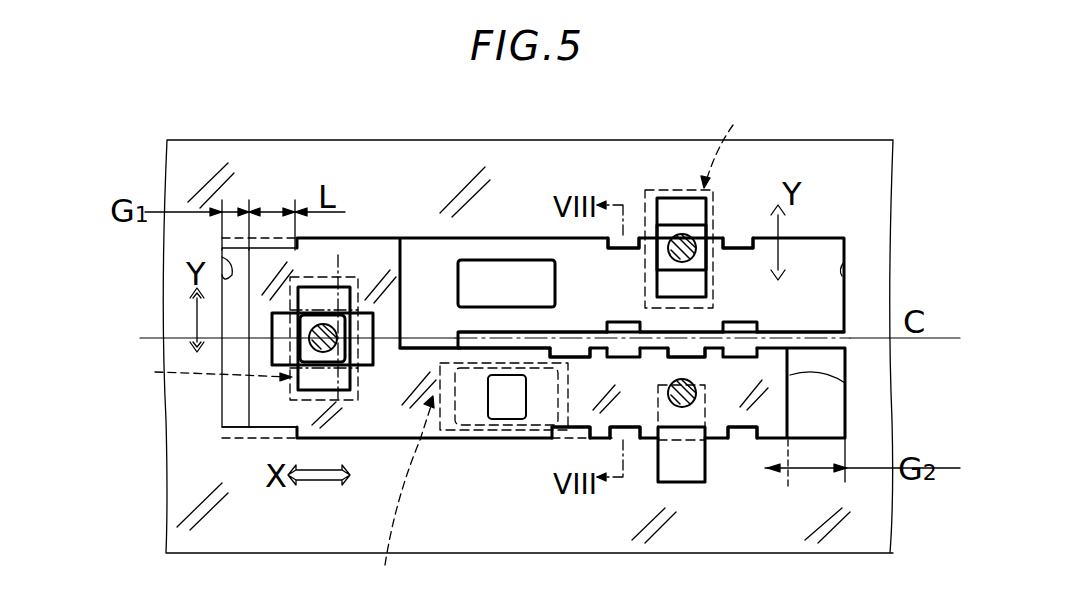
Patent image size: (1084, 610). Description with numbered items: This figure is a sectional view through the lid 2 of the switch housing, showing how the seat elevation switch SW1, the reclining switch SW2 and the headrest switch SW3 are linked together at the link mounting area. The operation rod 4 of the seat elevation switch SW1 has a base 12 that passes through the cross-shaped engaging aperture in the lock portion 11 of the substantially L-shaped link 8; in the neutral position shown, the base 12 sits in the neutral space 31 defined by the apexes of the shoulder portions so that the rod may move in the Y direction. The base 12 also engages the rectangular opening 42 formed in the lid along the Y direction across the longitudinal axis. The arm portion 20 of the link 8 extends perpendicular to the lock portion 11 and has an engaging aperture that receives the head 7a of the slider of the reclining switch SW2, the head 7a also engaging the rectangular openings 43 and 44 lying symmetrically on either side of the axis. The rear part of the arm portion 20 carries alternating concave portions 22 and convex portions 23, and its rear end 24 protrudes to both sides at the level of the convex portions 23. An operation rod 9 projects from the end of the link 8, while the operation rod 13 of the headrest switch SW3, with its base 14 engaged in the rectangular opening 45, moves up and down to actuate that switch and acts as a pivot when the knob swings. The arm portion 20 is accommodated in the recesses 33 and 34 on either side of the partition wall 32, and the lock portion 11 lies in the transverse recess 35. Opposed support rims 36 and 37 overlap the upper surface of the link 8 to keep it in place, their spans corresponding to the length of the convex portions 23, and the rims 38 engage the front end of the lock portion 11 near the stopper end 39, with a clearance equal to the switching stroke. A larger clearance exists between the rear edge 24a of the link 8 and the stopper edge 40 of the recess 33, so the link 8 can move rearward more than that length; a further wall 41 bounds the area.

The lid 2 is at (327, 150).
The operation rod 4 is at (373, 325).
The head 7a is at (510, 410).
The link 8 is at (378, 445).
The operation rod 9 is at (698, 402).
The lock portion 11 is at (257, 395).
The base 12 is at (320, 325).
The operation rod 13 is at (713, 228).
The base 14 is at (670, 232).
The arm portion 20 is at (448, 440).
The concave portions 22 is at (573, 352).
The convex portions 23 is at (600, 350).
The rear end 24 is at (762, 445).
The rear edge 24a is at (845, 383).
The neutral space 31 is at (337, 313).
The partition wall 32 is at (468, 318).
The recess 33 is at (838, 432).
The recess 34 is at (824, 313).
The recess 35 is at (249, 310).
The support rims 36 is at (632, 357).
The support rims 37 is at (624, 434).
The support rims 38 is at (222, 262).
The stopper end 39 is at (225, 428).
The stopper edge 40 is at (850, 396).
The wall 41 is at (844, 262).
The rectangular opening 42 is at (333, 382).
The rectangular opening 43 is at (472, 425).
The rectangular opening 44 is at (555, 300).
The rectangular opening 45 is at (679, 210).
The seat elevation switch SW1 is at (192, 365).
The reclining switch SW2 is at (383, 498).
The headrest switch SW3 is at (736, 138).